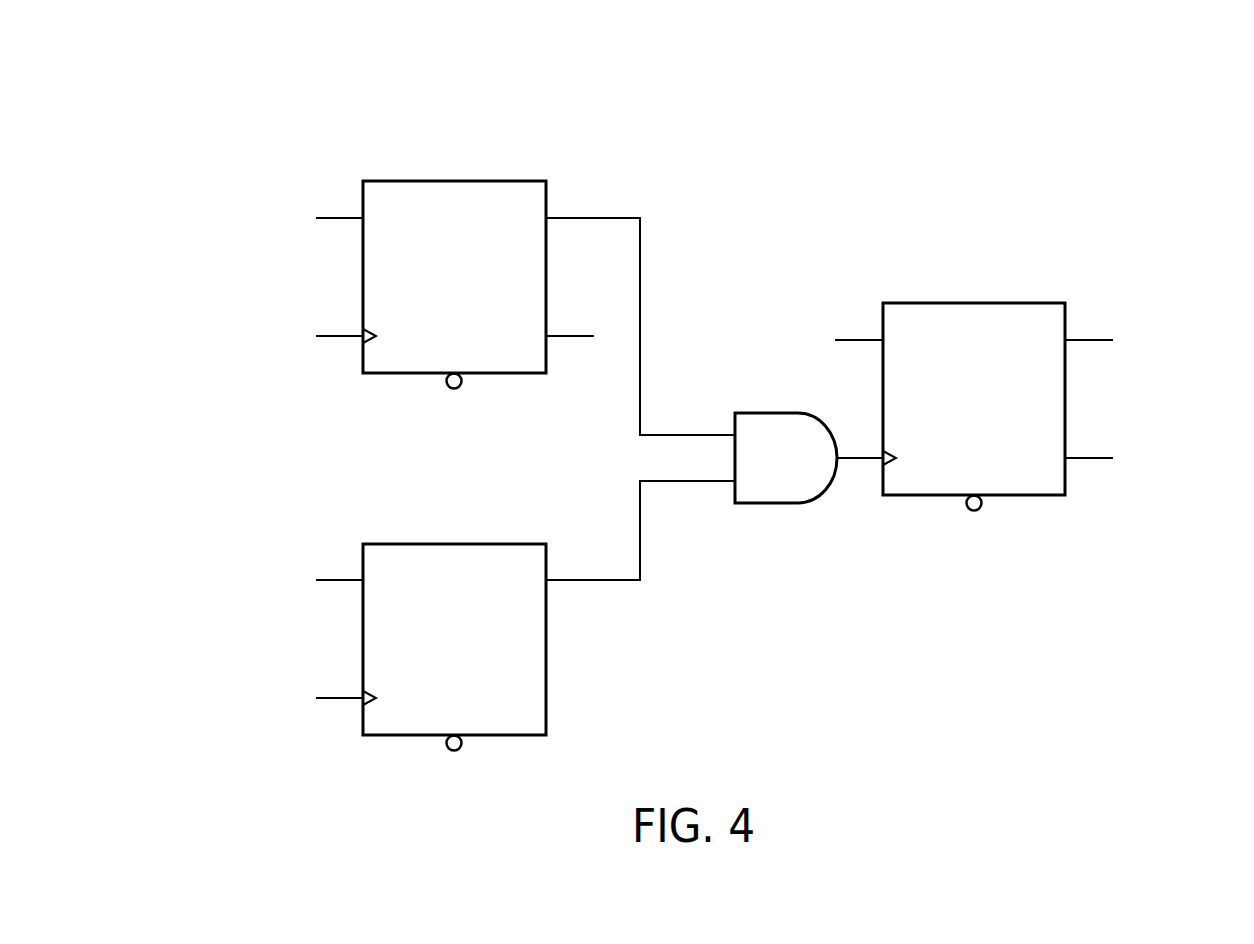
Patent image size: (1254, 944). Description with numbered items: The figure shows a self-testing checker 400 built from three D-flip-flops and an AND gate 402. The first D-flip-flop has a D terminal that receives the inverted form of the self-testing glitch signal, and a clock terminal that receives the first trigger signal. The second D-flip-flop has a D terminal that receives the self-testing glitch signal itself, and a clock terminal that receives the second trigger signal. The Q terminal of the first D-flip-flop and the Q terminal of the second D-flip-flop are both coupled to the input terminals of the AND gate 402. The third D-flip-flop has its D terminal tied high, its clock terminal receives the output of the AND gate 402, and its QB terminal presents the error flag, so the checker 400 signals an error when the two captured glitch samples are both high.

The self-testing checker 400 is at (161, 83).
The AND gate 402 is at (783, 503).